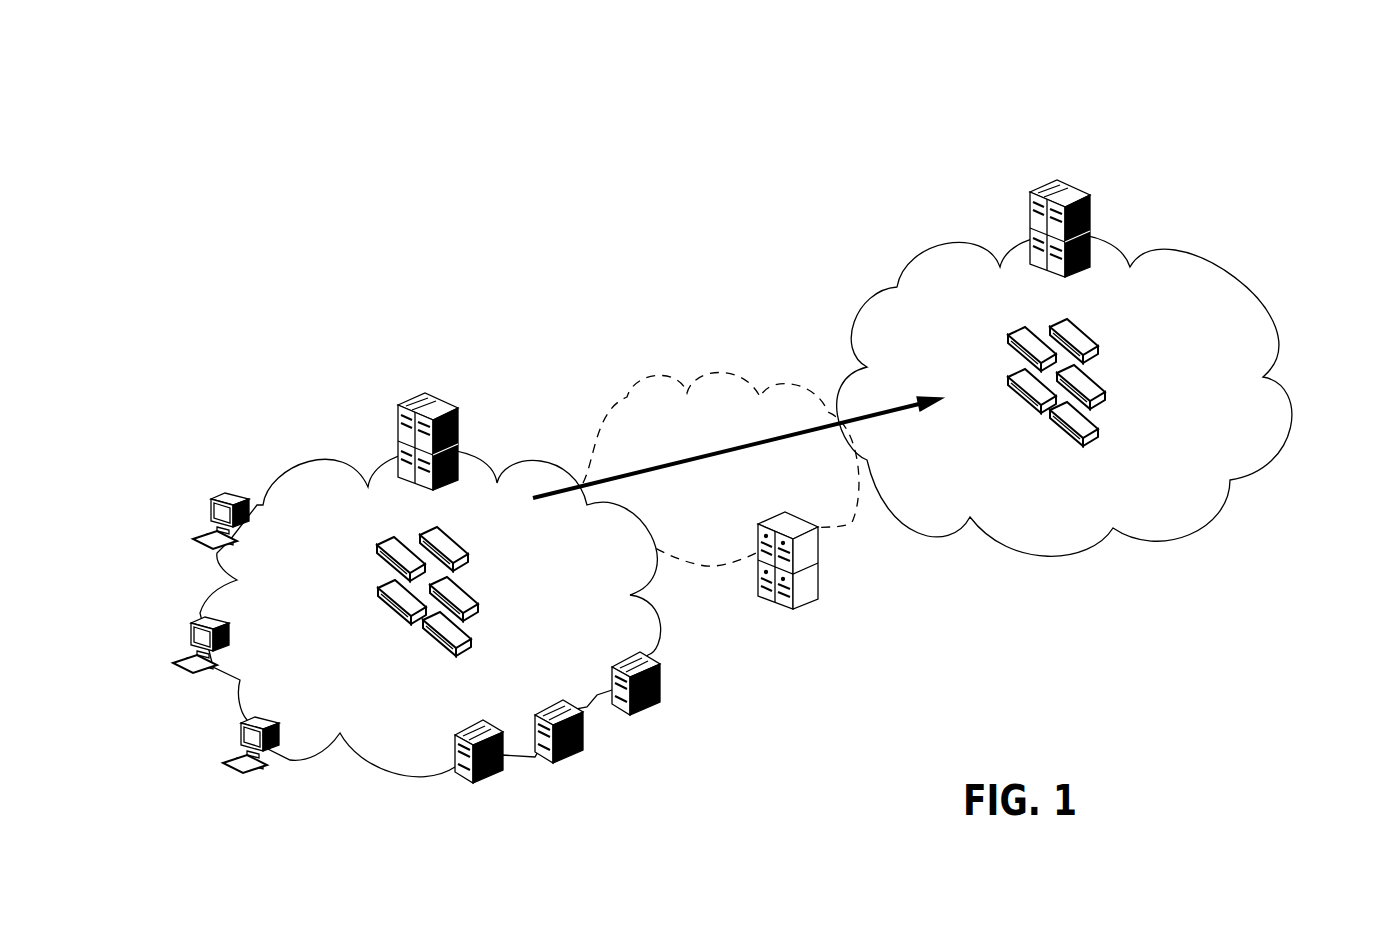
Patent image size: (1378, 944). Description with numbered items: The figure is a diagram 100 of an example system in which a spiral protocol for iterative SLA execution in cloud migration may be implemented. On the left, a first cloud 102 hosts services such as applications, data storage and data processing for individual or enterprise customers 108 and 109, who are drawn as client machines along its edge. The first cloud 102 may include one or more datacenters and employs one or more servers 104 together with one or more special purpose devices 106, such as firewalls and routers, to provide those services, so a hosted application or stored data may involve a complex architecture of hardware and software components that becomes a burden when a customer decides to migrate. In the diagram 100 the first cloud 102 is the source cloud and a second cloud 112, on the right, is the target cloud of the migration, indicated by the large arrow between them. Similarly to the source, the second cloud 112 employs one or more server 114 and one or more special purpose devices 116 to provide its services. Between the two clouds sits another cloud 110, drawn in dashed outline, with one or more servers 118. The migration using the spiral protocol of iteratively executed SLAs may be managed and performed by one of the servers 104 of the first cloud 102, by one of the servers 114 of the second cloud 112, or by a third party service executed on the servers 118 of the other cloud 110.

The diagram 100 is at (1219, 116).
The cloud 1 102 is at (331, 677).
The servers 104 is at (439, 392).
The special purpose devices 106 is at (476, 551).
The customers 108 is at (236, 753).
The customers 109 is at (502, 770).
The another cloud 110 is at (711, 362).
The cloud 2 112 is at (995, 457).
The server 114 is at (1066, 174).
The special purpose devices 116 is at (1106, 335).
The servers 118 is at (804, 615).